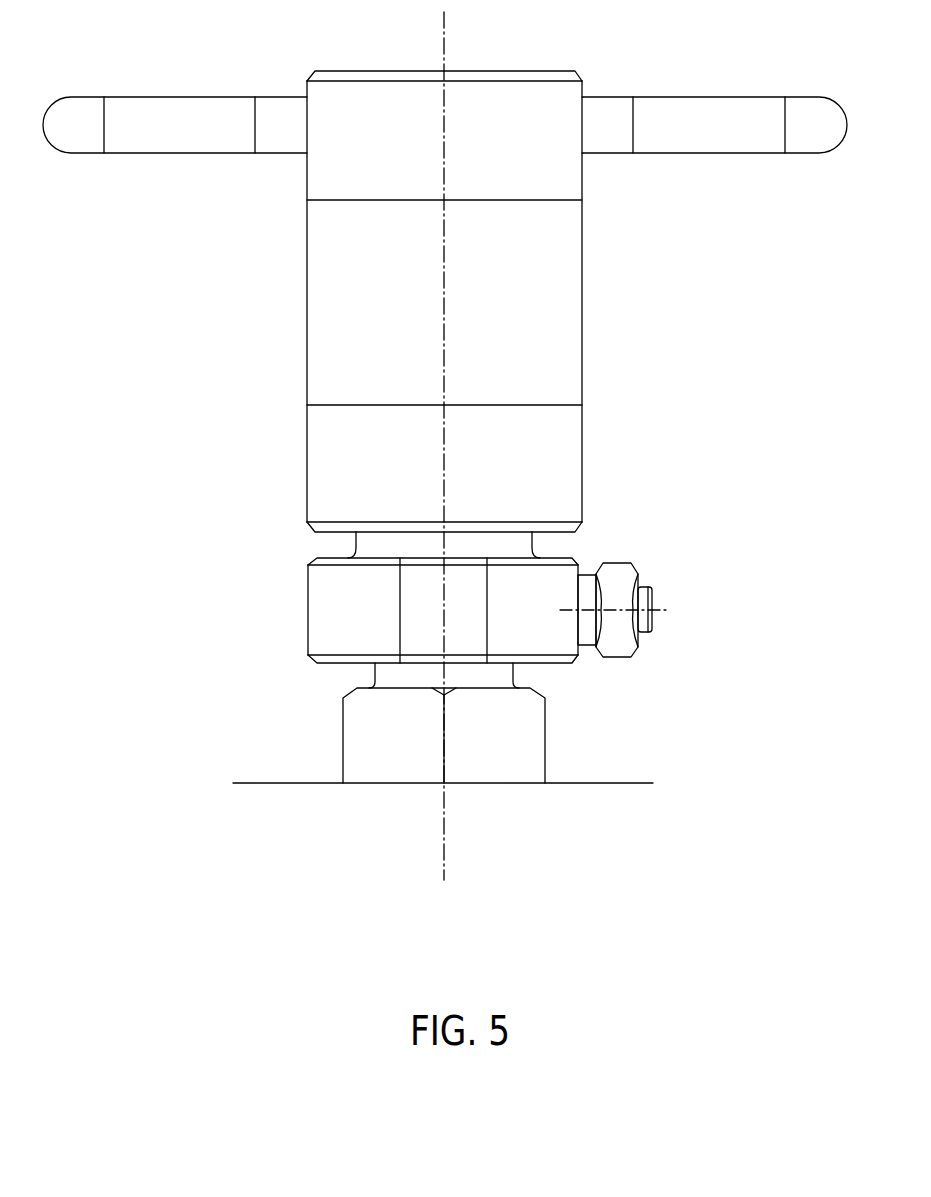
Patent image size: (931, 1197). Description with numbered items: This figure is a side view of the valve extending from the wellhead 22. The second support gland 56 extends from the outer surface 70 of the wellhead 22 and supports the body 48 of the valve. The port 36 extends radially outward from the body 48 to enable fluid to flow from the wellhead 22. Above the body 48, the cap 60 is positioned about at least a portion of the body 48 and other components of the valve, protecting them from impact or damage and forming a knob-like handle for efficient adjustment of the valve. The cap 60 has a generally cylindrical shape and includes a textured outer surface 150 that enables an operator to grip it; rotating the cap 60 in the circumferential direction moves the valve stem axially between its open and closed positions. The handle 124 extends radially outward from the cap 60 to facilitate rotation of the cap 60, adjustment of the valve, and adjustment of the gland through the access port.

The wellhead 22 is at (302, 858).
The port 36 is at (618, 668).
The body 48 is at (362, 539).
The second support gland 56 is at (360, 746).
The cap 60 is at (563, 77).
The outer surface 70 is at (297, 784).
The handle 124 is at (190, 97).
The textured outer surface 150 is at (313, 261).